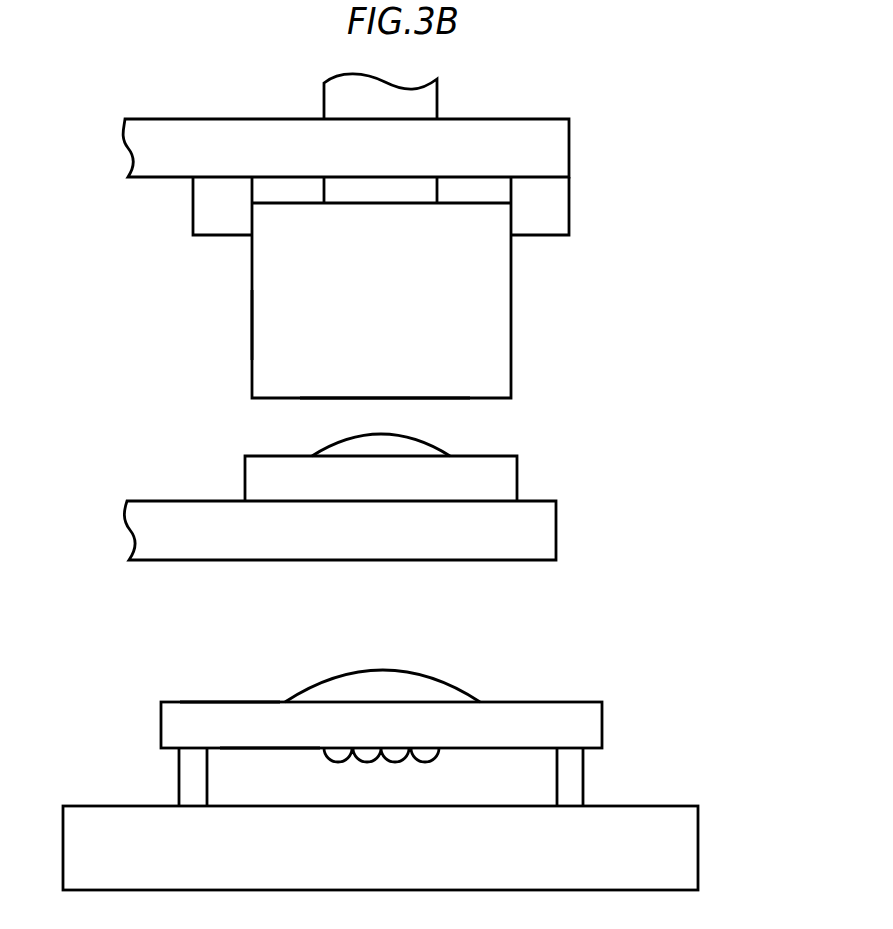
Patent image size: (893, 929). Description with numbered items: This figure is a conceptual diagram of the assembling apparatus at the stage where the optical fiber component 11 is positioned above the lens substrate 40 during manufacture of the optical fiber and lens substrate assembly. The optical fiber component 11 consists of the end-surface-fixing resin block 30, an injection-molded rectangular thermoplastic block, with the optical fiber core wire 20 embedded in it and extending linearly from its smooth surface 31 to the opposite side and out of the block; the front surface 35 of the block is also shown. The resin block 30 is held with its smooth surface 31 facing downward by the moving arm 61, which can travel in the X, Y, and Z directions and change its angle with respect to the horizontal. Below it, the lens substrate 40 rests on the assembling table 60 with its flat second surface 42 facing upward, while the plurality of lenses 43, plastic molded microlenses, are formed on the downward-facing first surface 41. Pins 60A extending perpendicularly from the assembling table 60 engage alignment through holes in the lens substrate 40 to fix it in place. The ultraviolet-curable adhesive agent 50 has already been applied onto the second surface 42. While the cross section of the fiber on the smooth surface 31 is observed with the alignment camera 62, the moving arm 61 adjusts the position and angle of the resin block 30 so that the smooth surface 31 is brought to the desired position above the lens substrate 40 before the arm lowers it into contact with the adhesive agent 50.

The optical fiber component 11 is at (421, 321).
The optical fiber core wire 20 is at (331, 93).
The end-surface-fixing resin block 30 is at (477, 266).
The smooth surface 31 is at (478, 399).
The front surface 35 is at (269, 323).
The lens substrate 40 is at (567, 726).
The first surface 41 is at (273, 750).
The second surface 42 is at (215, 702).
The lenses 43 is at (425, 753).
The ultraviolet-curable adhesive agent 50 is at (380, 683).
The assembling table 60 is at (665, 845).
The pins 60A is at (568, 780).
The moving arm 61 is at (538, 159).
The alignment camera 62 is at (528, 531).